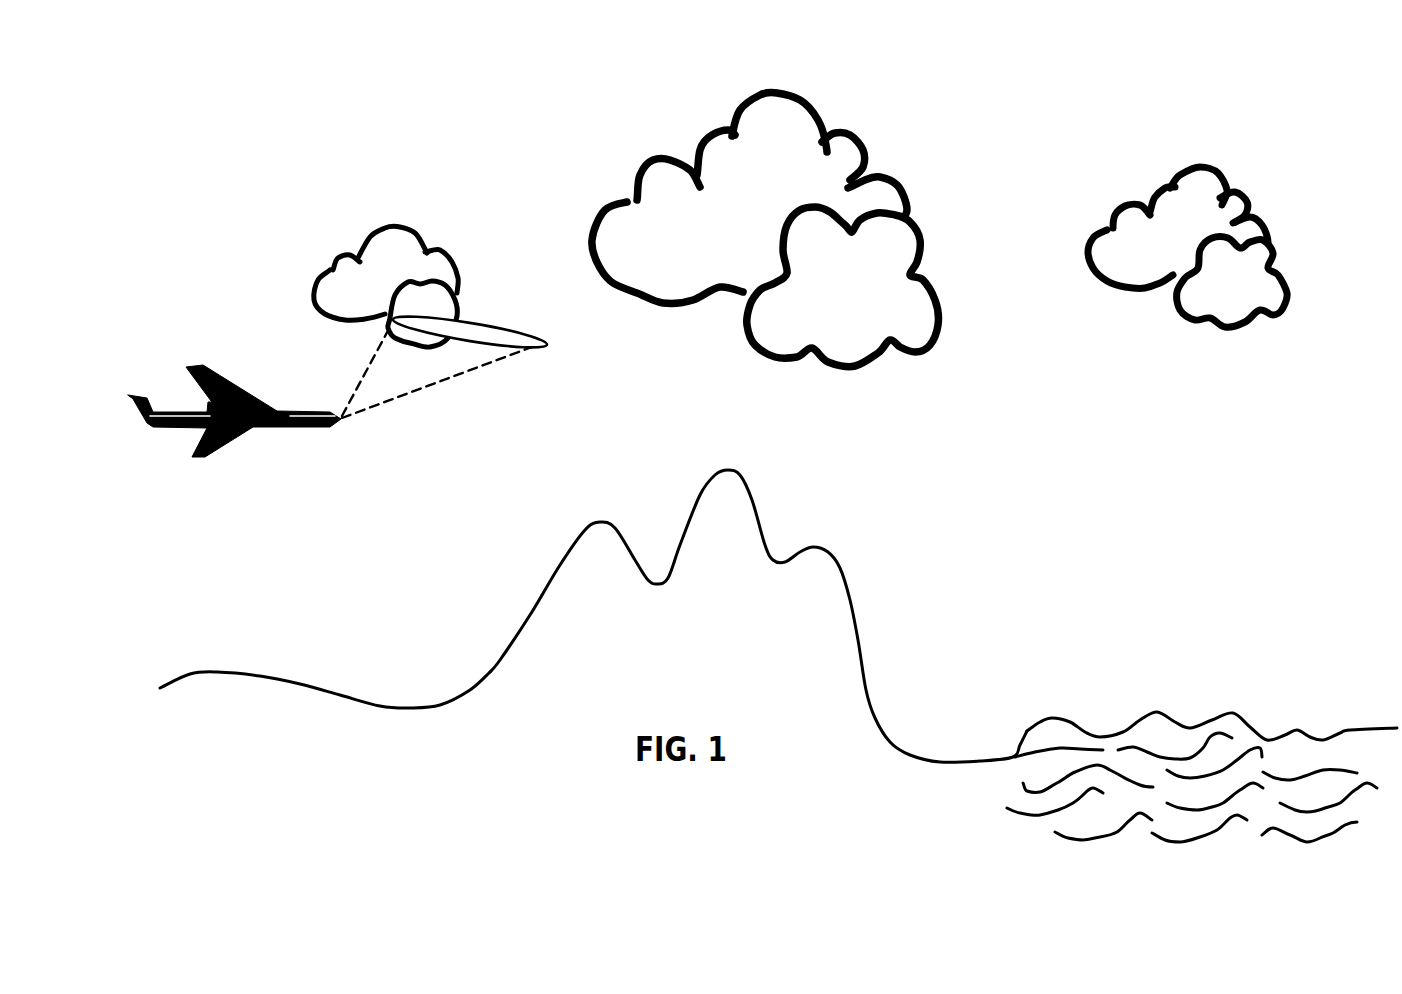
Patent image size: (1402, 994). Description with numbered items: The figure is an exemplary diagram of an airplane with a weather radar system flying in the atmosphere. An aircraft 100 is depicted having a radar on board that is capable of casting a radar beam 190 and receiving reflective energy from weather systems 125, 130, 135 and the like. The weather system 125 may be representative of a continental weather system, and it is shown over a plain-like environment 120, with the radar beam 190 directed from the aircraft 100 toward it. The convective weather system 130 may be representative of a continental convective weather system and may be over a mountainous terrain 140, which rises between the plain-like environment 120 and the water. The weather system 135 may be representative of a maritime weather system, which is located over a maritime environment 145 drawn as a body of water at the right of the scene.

The aircraft 100 is at (258, 432).
The plain-like environment 120 is at (380, 706).
The weather system 125 is at (463, 300).
The convective weather system 130 is at (940, 323).
The weather system 135 is at (1280, 250).
The mountainous terrain 140 is at (833, 555).
The maritime environment 145 is at (1215, 715).
The radar beam 190 is at (543, 332).